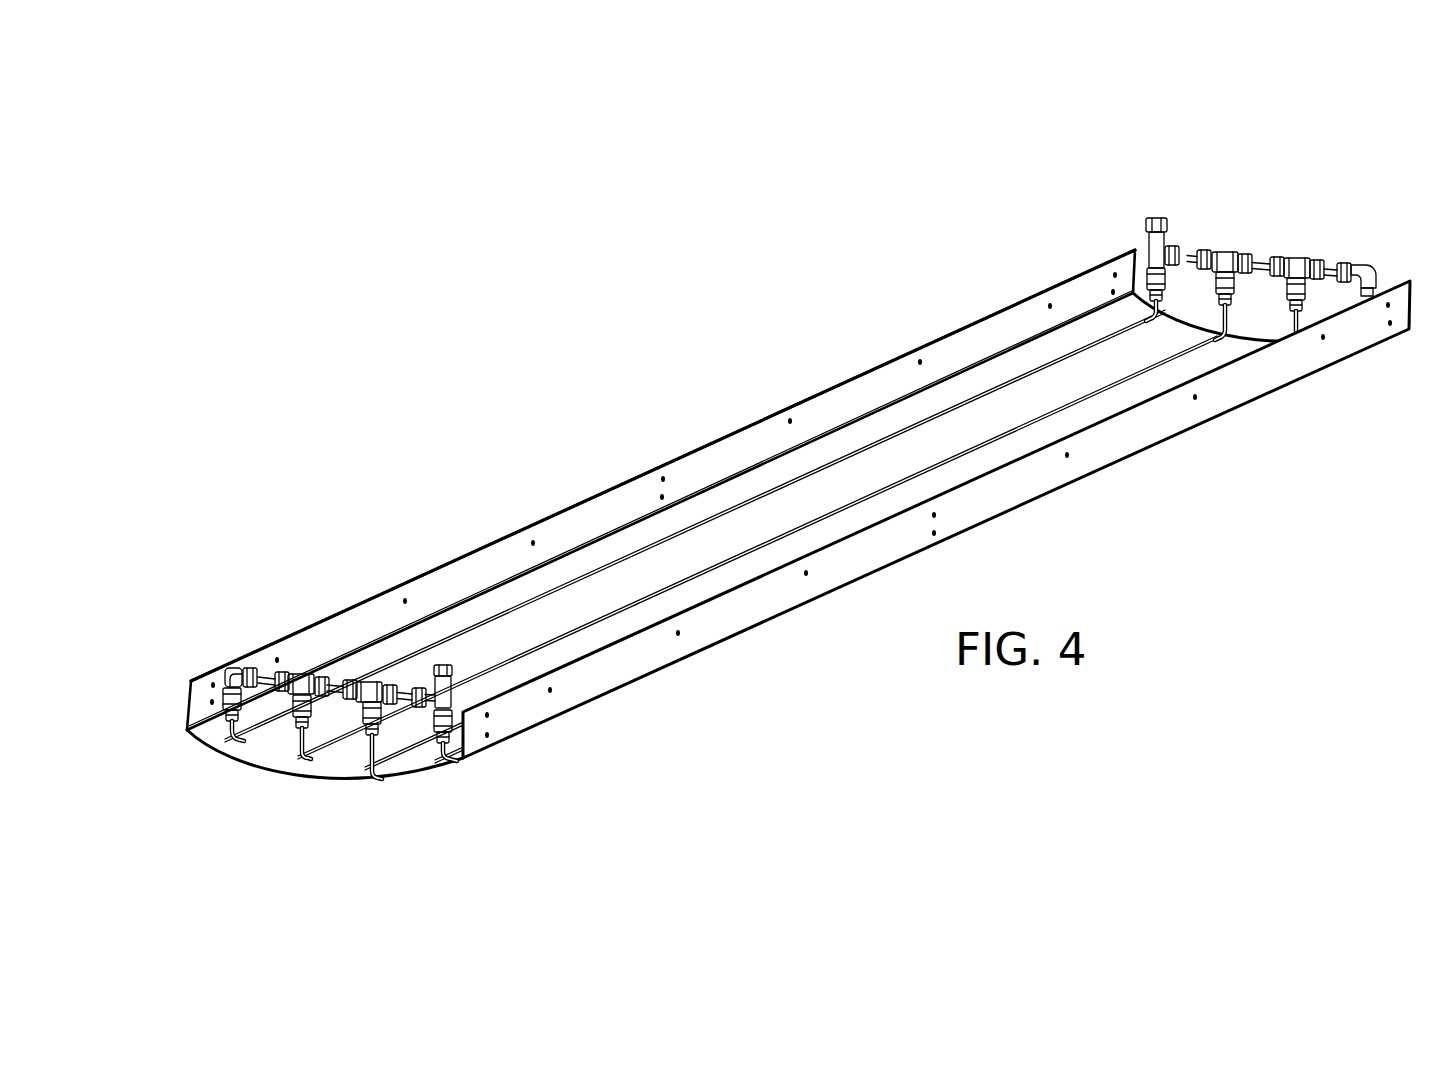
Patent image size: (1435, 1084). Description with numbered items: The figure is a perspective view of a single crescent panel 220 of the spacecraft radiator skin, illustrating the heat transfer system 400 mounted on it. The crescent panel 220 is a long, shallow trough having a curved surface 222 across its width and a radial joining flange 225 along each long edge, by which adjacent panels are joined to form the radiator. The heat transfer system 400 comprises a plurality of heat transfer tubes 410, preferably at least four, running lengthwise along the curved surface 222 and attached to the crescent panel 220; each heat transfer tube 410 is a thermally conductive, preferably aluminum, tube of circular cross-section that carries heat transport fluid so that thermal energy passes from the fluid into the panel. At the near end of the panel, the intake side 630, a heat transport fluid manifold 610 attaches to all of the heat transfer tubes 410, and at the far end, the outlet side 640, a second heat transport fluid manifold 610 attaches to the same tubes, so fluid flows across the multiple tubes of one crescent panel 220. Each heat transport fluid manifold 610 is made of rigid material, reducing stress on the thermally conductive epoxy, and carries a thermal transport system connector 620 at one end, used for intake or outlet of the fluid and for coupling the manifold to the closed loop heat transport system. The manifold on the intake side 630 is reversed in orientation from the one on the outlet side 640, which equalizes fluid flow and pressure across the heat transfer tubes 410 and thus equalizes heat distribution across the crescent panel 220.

The heat transfer system 400 is at (773, 509).
The crescent panel 220 is at (773, 522).
The curved surface 222 is at (315, 805).
The radial joining flange 225 is at (480, 550).
The heat transfer tube 410 is at (225, 740).
The heat transport fluid manifold 610 is at (1293, 260).
The thermal transport system connector 620 is at (1155, 218).
The intake side 630 is at (306, 689).
The outlet side 640 is at (1352, 400).